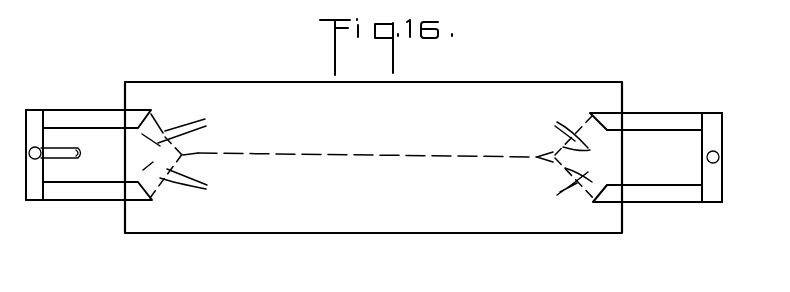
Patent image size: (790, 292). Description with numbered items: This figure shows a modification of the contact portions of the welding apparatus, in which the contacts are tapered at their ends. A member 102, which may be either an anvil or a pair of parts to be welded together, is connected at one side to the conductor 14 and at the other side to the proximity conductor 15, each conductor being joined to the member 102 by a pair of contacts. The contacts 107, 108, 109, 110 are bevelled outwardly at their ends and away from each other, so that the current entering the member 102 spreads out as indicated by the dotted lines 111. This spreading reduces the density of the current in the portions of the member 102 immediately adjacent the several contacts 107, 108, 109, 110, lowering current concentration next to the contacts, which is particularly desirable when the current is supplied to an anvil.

The member 102 is at (545, 97).
The contact 107 is at (135, 113).
The contact 108 is at (137, 198).
The contact 109 is at (605, 113).
The contact 110 is at (608, 203).
The dotted lines 111 is at (368, 158).
The conductor 14 is at (719, 155).
The proximity conductor 15 is at (74, 156).